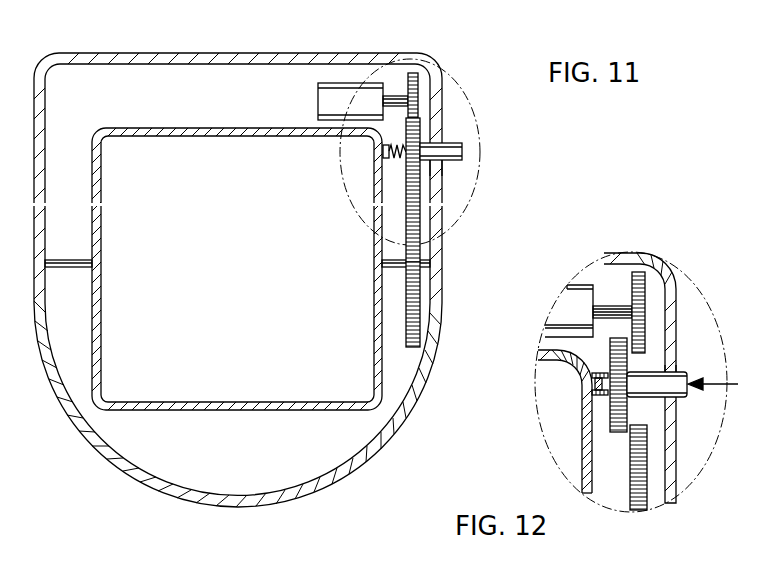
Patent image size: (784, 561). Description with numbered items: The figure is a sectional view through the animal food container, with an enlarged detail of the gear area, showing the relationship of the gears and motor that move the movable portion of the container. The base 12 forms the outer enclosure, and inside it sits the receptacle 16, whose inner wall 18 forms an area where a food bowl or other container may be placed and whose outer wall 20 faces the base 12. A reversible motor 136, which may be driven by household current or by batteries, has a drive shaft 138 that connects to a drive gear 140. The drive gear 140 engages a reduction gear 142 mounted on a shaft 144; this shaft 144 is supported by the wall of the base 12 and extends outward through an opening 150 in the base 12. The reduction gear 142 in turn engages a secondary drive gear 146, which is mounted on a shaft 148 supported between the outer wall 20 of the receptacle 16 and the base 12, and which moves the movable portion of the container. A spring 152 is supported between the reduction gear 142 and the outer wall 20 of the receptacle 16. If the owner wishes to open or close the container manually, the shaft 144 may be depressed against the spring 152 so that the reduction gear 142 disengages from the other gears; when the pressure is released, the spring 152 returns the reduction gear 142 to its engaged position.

In FIG. 11, the base 12 is at (257, 280).
In FIG. 12, the base 12 is at (665, 268).
In FIG. 11, the receptacle 16 is at (192, 388).
In FIG. 12, the receptacle 16 is at (553, 388).
In FIG. 11, the inner wall 18 is at (375, 312).
In FIG. 12, the inner wall 18 is at (580, 457).
In FIG. 11, the outer wall 20 is at (378, 396).
In FIG. 12, the outer wall 20 is at (592, 485).
In FIG. 11, the reversible motor 136 is at (372, 92).
In FIG. 12, the reversible motor 136 is at (578, 286).
In FIG. 11, the drive shaft 138 is at (395, 100).
In FIG. 12, the drive shaft 138 is at (615, 305).
In FIG. 11, the drive gear 140 is at (420, 100).
In FIG. 12, the drive gear 140 is at (643, 303).
In FIG. 11, the reduction gear 142 is at (417, 133).
In FIG. 12, the reduction gear 142 is at (613, 351).
In FIG. 11, the shaft 144 is at (462, 151).
In FIG. 12, the shaft 144 is at (688, 398).
In FIG. 11, the secondary drive gear 146 is at (417, 227).
In FIG. 12, the secondary drive gear 146 is at (643, 477).
In FIG. 11, the shaft 148 is at (420, 262).
In FIG. 11, the opening 150 is at (440, 163).
In FIG. 12, the opening 150 is at (676, 365).
In FIG. 11, the spring 152 is at (395, 153).
In FIG. 12, the spring 152 is at (593, 393).